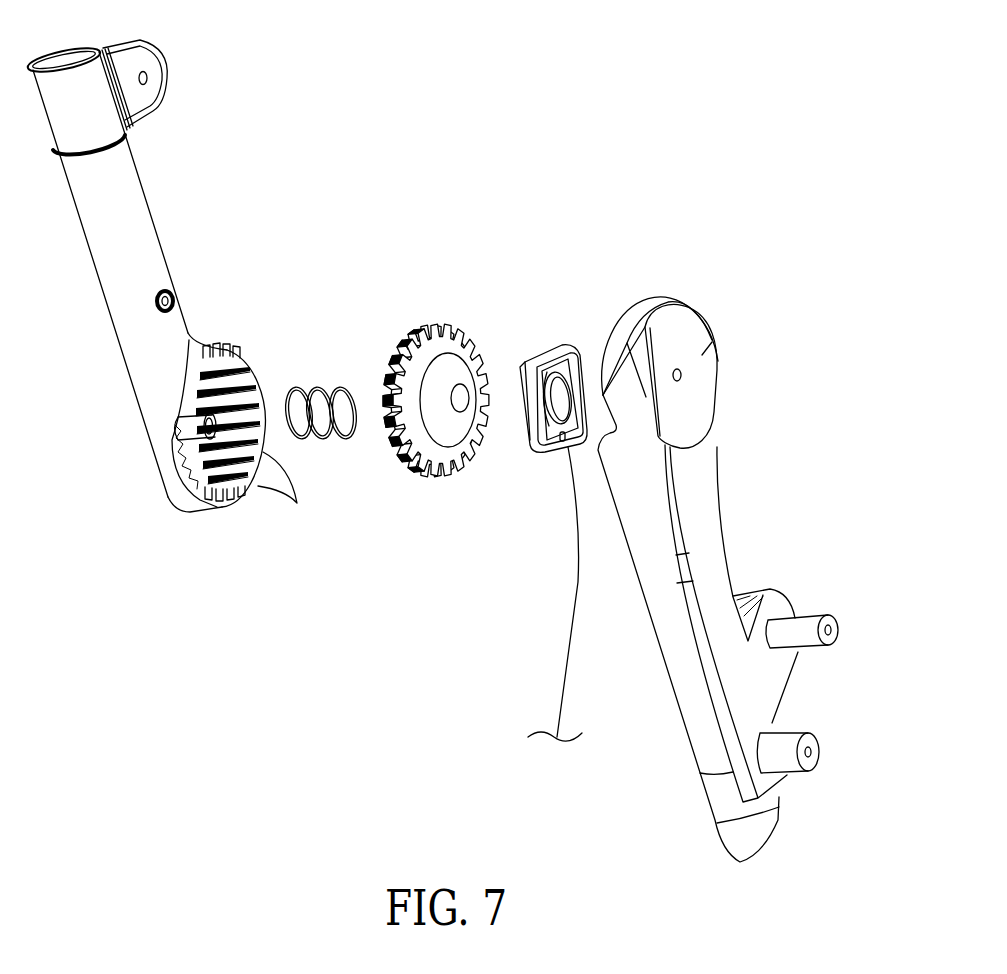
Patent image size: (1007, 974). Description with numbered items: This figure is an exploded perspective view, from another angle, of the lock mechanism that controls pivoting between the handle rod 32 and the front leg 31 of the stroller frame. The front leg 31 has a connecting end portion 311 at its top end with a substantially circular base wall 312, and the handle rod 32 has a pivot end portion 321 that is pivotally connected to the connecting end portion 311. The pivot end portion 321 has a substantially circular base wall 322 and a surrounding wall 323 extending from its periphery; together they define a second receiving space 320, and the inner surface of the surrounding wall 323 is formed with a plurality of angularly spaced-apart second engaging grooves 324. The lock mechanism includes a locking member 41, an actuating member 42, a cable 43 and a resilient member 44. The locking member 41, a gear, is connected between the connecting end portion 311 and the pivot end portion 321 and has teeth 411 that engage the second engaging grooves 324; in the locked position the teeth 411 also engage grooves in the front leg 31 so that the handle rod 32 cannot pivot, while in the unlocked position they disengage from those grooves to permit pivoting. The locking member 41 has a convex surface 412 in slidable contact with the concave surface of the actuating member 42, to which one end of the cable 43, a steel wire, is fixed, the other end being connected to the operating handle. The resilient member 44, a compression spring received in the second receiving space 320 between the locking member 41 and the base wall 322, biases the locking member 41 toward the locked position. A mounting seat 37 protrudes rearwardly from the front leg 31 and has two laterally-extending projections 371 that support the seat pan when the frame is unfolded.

The front leg 31 is at (734, 579).
The connecting end portion 311 is at (746, 376).
The base wall 312 is at (677, 375).
The handle rod 32 is at (128, 322).
The second receiving space 320 is at (204, 463).
The pivot end portion 321 is at (271, 422).
The base wall 322 is at (200, 397).
The surrounding wall 323 is at (185, 495).
The second engaging grooves 324 is at (253, 470).
The mounting seat 37 is at (801, 704).
The projections 371 is at (828, 628).
The locking member 41 is at (436, 414).
The teeth 411 is at (436, 371).
The convex surface 412 is at (450, 373).
The actuating member 42 is at (550, 348).
The cable 43 is at (564, 653).
The resilient member 44 is at (340, 440).